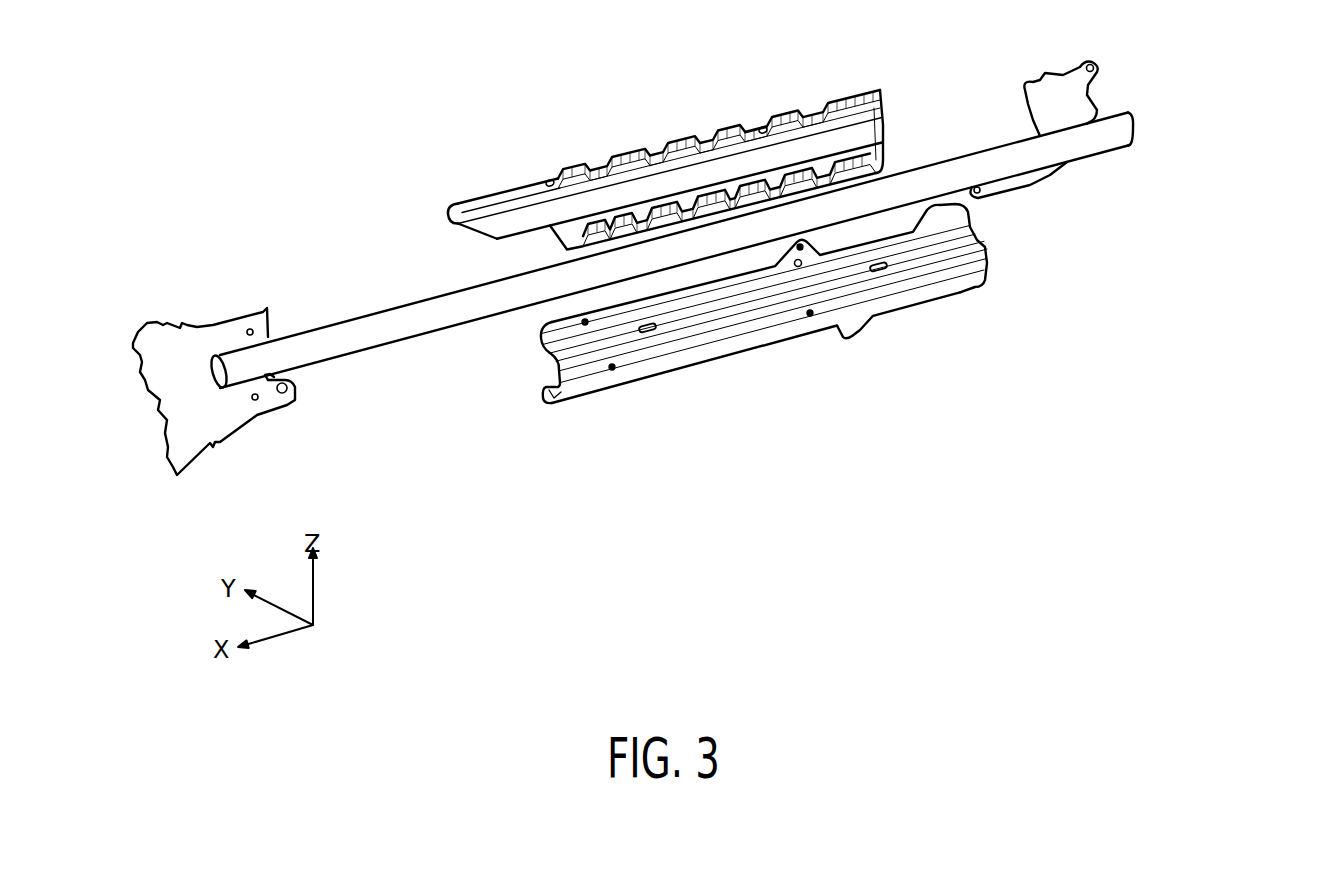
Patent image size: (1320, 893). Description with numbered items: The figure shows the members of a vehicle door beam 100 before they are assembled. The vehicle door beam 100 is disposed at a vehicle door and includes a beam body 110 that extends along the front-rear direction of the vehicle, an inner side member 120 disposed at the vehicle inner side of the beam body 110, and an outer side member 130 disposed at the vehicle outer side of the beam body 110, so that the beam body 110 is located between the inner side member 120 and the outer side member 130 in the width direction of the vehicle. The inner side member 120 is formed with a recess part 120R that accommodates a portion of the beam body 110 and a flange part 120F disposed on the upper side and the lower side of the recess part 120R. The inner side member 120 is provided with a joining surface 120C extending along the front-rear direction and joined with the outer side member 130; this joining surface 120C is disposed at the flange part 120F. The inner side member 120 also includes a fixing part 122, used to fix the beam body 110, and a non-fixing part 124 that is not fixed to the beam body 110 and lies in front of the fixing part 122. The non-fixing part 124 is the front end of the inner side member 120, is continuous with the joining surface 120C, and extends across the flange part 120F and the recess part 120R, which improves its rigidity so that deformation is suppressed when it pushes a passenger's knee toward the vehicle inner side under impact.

The vehicle door beam 100 is at (1268, 525).
The beam body 110 is at (387, 327).
The inner side member 120 is at (711, 133).
The joining surface 120C is at (837, 110).
The flange part 120F is at (762, 120).
The recess part 120R is at (665, 185).
The fixing part 122 is at (602, 173).
The non-fixing part 124 is at (510, 197).
The outer side member 130 is at (1010, 237).